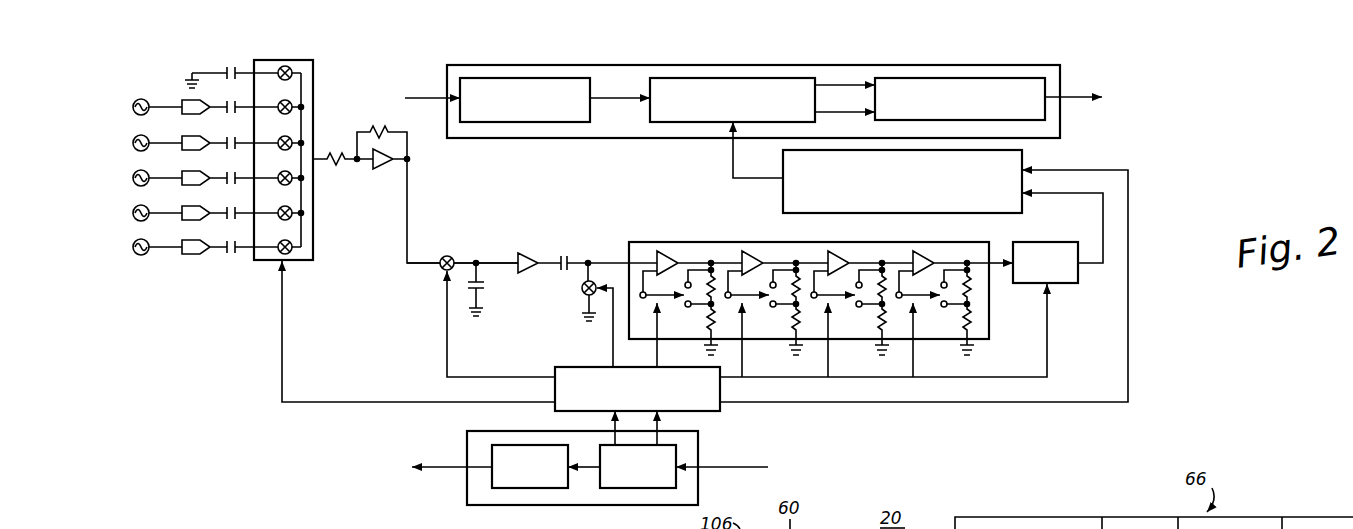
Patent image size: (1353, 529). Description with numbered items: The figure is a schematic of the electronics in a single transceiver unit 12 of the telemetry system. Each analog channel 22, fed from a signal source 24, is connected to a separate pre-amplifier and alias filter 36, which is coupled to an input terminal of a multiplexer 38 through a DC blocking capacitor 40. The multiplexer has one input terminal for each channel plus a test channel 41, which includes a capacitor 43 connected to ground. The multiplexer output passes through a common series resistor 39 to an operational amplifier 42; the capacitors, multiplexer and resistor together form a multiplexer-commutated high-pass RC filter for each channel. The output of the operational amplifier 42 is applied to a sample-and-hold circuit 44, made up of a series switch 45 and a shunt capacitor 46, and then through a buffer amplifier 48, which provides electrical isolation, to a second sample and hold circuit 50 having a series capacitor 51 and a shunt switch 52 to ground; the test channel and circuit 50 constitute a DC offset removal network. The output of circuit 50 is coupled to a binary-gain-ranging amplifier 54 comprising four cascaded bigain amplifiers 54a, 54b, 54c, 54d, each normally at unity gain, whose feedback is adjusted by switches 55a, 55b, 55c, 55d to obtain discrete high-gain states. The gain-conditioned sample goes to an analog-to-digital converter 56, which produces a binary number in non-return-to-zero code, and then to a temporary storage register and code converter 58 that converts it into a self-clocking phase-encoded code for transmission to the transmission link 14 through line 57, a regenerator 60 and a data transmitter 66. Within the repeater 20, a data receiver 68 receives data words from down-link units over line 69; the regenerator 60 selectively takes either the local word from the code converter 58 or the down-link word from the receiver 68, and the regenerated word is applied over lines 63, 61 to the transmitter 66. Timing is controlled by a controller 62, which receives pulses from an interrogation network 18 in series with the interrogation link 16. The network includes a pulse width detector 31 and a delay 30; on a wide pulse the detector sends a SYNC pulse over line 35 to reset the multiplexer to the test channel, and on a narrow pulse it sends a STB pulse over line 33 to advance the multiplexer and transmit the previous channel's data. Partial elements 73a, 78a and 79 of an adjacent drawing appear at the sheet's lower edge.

The transceiver unit 12 is at (574, 221).
The transmission link 14 is at (1074, 100).
The interrogation link 16 is at (735, 467).
The interrogation network 18 is at (585, 470).
The repeater 20 is at (574, 141).
The analog channel 22 is at (163, 103).
The signal source 24 is at (133, 105).
The delay 30 is at (518, 489).
The pulse width detector 31 is at (633, 489).
The line 33 is at (665, 418).
The line 35 is at (608, 420).
The pre-amplifier and alias filter 36 is at (182, 114).
The multiplexer 38 is at (316, 85).
The common series resistor 39 is at (337, 165).
The DC blocking capacitor 40 is at (223, 120).
The test channel 41 is at (202, 72).
The operational amplifier 42 is at (386, 172).
The capacitor 43 is at (225, 85).
The sample-and-hold circuit 44 is at (470, 258).
The series switch 45 is at (447, 255).
The shunt capacitor 46 is at (488, 292).
The buffer amplifier 48 is at (528, 253).
The sample and hold circuit 50 is at (599, 257).
The series capacitor 51 is at (565, 255).
The shunt switch 52 is at (581, 290).
The binary-gain-ranging amplifier 54 is at (829, 293).
The bigain amplifier 54a is at (667, 251).
The bigain amplifier 54b is at (753, 251).
The bigain amplifier 54c is at (835, 250).
The bigain amplifier 54d is at (925, 250).
The switch 55a is at (682, 303).
The switch 55b is at (767, 303).
The switch 55c is at (853, 303).
The switch 55d is at (938, 303).
The analog-to-digital converter 56 is at (1055, 240).
The line 57 is at (733, 178).
The temporary storage register and code converter 58 is at (1023, 157).
The regenerator 60 is at (668, 122).
The line 61 is at (820, 112).
The controller 62 is at (583, 367).
The line 63 is at (824, 85).
The data transmitter 66 is at (1048, 83).
The data receiver 68 is at (525, 122).
The line 69 is at (614, 100).
The line 73a is at (1100, 517).
The line 78a is at (1178, 517).
The line 79 is at (1283, 517).